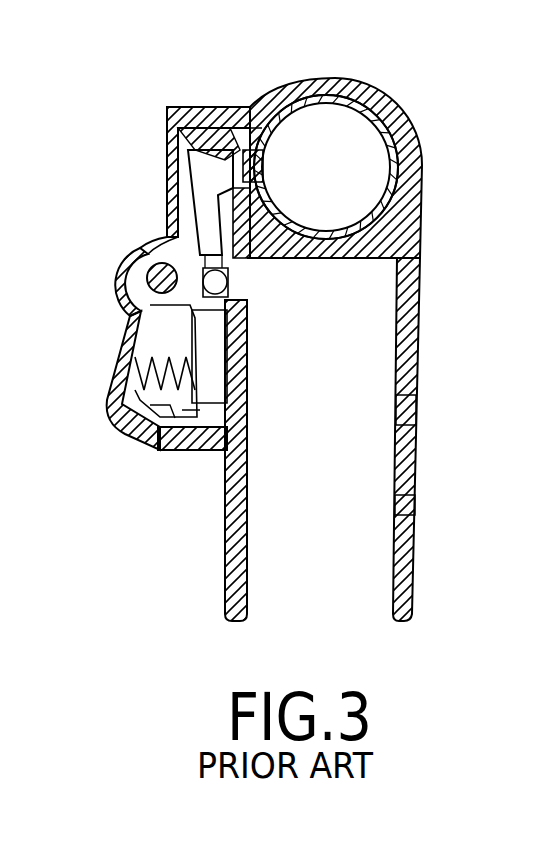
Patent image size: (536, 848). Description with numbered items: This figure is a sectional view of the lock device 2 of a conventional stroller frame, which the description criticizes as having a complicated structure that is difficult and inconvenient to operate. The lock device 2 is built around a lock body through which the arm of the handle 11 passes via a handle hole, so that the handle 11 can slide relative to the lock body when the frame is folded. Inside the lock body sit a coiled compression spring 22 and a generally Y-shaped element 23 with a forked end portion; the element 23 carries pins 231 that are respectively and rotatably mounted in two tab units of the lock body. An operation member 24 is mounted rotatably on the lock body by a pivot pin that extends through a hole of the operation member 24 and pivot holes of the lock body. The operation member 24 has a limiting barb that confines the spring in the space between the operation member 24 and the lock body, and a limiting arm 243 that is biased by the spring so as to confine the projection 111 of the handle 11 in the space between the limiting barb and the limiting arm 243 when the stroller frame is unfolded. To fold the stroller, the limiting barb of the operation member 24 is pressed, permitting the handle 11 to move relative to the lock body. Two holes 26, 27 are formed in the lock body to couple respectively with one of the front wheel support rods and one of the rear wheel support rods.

The lock device 2 is at (430, 166).
The handle 11 is at (343, 140).
The projection 111 is at (224, 147).
The limiting arm 243 is at (208, 110).
The Y-shaped element 23 is at (205, 190).
The operation member 24 is at (128, 258).
The pins 231 is at (147, 284).
The coiled compression spring 22 is at (133, 403).
The hole 26 is at (407, 413).
The hole 27 is at (403, 505).